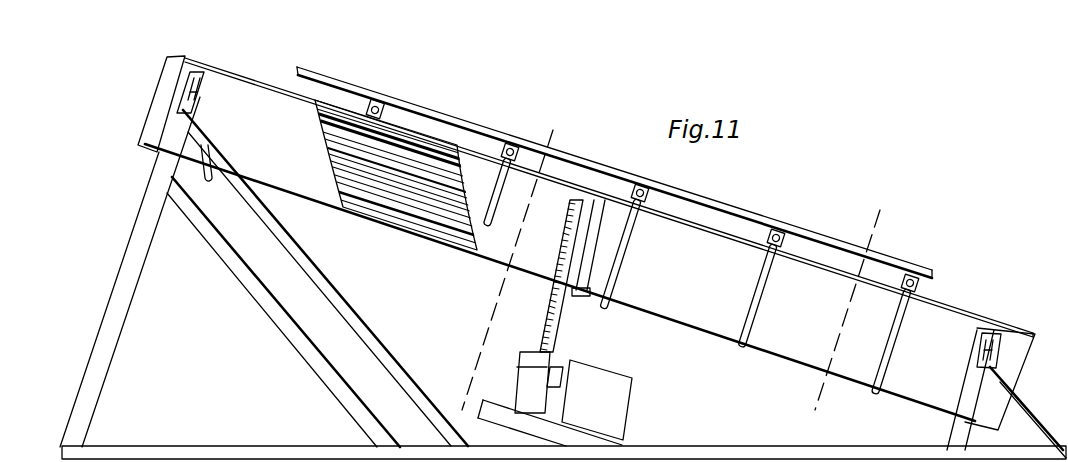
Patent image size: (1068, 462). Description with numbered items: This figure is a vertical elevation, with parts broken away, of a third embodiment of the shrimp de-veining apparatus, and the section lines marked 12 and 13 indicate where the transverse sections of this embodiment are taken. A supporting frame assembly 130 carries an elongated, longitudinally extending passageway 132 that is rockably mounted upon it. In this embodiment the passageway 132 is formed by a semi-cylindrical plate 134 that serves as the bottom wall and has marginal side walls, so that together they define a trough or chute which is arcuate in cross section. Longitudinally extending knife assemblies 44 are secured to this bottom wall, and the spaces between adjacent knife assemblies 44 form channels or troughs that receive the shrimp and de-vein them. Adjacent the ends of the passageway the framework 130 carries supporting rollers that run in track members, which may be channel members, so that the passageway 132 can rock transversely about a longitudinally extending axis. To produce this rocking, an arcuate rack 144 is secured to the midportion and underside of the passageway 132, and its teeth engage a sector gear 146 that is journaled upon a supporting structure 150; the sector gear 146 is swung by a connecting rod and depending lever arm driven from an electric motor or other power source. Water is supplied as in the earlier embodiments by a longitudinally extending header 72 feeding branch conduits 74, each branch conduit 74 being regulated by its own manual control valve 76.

The section line 12- 12 is at (588, 176).
The section line 13- 13 is at (900, 243).
The knife assemblies 44 is at (360, 171).
The header 72 is at (727, 208).
The branch conduits 74 is at (762, 298).
The manual control valve 76 is at (652, 200).
The supporting frame assembly 130 is at (125, 252).
The passageway 132 is at (297, 167).
The semi-cylindrical plate 134 is at (692, 300).
The arcuate rack 144 is at (570, 255).
The sector gear 146 is at (562, 317).
The supporting structure 150 is at (512, 413).